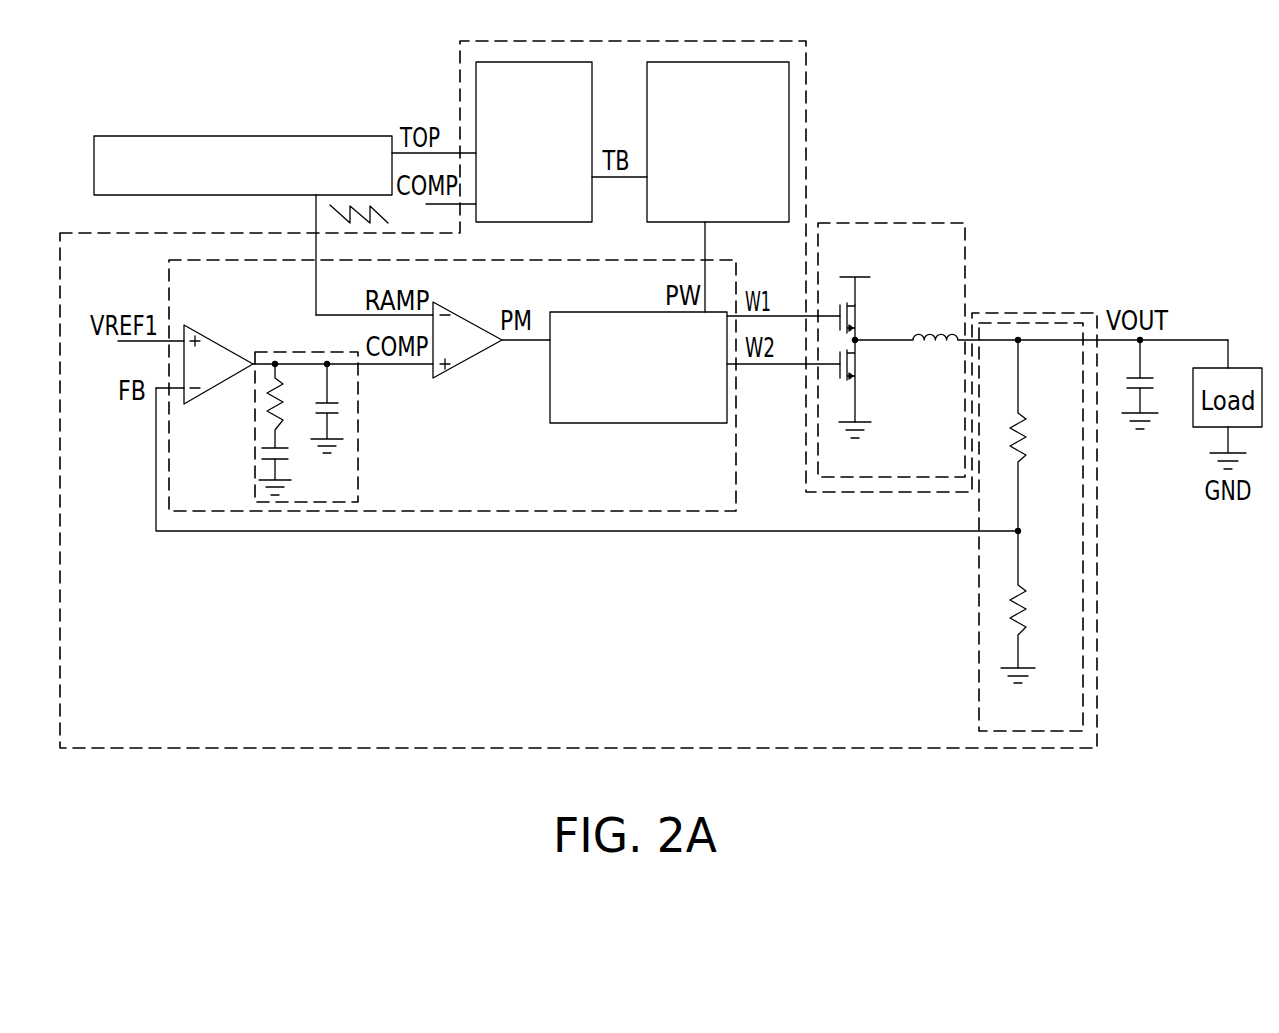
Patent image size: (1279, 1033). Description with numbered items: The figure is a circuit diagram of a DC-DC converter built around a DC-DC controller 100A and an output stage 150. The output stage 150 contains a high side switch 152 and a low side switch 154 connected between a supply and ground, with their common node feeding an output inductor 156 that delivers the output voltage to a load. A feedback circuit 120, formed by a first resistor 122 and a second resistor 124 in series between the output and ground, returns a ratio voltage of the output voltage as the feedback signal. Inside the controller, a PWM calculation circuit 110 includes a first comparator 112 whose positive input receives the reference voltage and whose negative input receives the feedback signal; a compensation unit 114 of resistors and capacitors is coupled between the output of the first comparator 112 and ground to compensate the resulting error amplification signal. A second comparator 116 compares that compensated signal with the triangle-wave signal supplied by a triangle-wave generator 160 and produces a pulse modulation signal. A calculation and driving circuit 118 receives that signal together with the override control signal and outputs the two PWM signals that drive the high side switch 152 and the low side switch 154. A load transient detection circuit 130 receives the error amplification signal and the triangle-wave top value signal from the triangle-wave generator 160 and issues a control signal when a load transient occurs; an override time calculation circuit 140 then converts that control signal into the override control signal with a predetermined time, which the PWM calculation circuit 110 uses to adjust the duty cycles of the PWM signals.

The DC-DC controller 100A is at (808, 44).
The pulse width modulation calculation circuit 110 is at (621, 259).
The comparator 112 is at (214, 342).
The compensation unit 114 is at (284, 352).
The comparator 116 is at (460, 317).
The calculation and driving circuit 118 is at (602, 312).
The feedback circuit 120 is at (1031, 502).
The resistor 122 is at (1044, 435).
The resistor 124 is at (1044, 599).
The load transient detection circuit 130 is at (577, 62).
The override time calculation circuit 140 is at (745, 62).
The output stage 150 is at (1023, 326).
The high side switch 152 is at (871, 320).
The low side switch 154 is at (871, 381).
The output inductor 156 is at (1041, 318).
The triangle-wave generator 160 is at (371, 136).